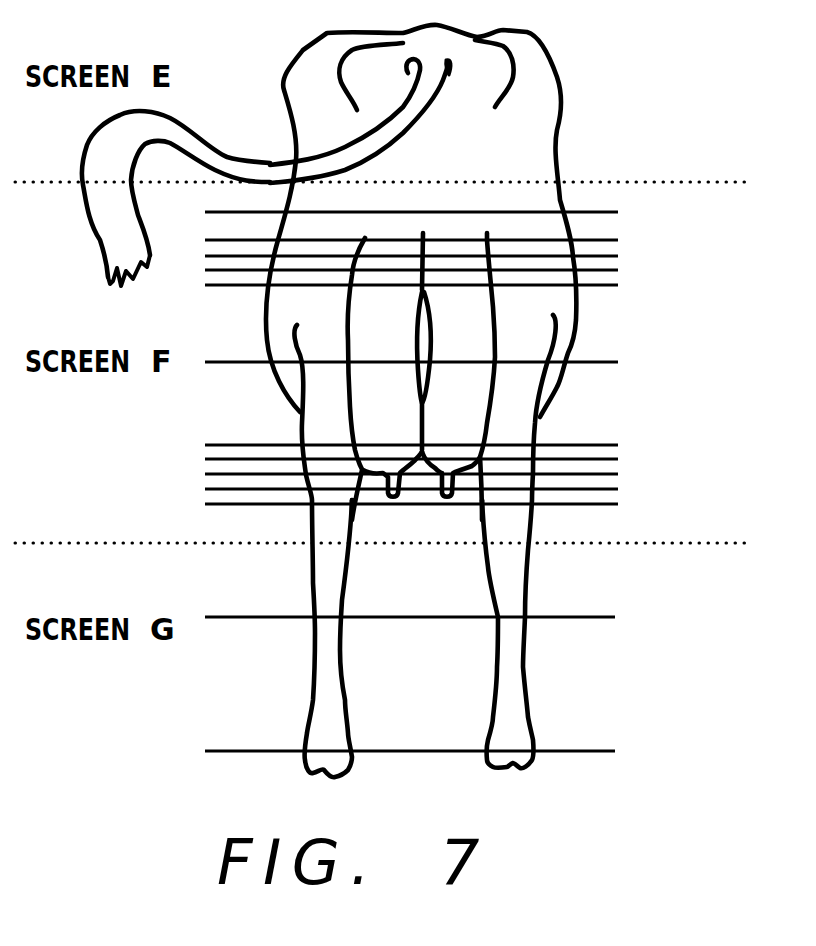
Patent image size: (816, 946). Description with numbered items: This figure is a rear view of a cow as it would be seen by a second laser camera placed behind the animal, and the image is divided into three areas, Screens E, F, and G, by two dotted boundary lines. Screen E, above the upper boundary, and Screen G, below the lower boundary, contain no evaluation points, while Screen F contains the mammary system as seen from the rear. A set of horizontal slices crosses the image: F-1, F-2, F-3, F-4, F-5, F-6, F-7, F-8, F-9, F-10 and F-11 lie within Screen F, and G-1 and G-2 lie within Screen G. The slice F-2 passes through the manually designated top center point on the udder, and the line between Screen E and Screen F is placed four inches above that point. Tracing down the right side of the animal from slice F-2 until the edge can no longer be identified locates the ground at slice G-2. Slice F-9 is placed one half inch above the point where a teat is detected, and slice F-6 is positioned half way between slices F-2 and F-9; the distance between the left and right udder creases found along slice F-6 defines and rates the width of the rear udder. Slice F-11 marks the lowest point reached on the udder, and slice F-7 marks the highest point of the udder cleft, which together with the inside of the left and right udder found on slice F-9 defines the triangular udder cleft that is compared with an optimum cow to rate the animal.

The scan line F-1 of screen F F-1 is at (623, 213).
The F-2 slice F-2 is at (623, 240).
The scan line F-3 of screen F F-3 is at (623, 256).
The scan line F-4 of screen F F-4 is at (623, 270).
The scan line F-5 of screen F F-5 is at (623, 285).
The F-6 slice F-6 is at (623, 362).
The F-7 slice F-7 is at (623, 445).
The scan line F-8 of screen F F-8 is at (623, 459).
The F-9 slice F-9 is at (623, 474).
The scan line F-10 of screen F F-10 is at (623, 489).
The F-11 slice F-11 is at (623, 504).
The scan line G-1 of screen G G-1 is at (620, 617).
The G-2 slice G-2 is at (620, 751).